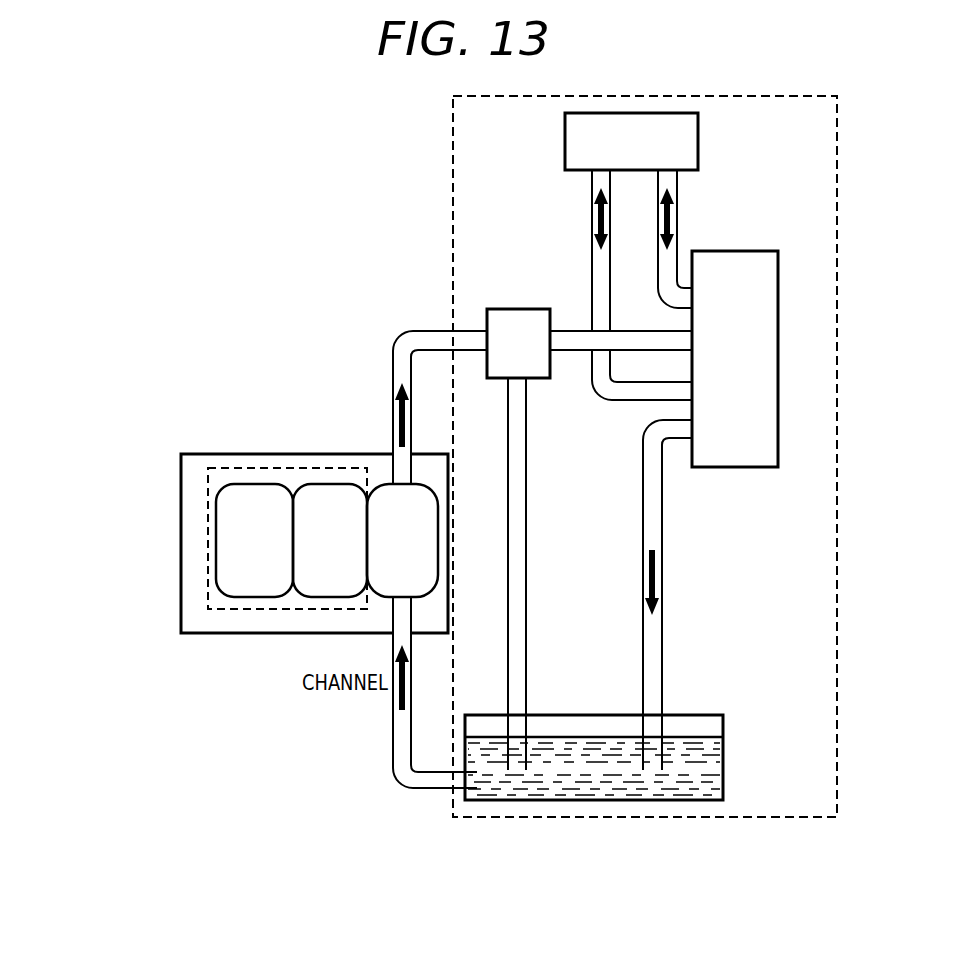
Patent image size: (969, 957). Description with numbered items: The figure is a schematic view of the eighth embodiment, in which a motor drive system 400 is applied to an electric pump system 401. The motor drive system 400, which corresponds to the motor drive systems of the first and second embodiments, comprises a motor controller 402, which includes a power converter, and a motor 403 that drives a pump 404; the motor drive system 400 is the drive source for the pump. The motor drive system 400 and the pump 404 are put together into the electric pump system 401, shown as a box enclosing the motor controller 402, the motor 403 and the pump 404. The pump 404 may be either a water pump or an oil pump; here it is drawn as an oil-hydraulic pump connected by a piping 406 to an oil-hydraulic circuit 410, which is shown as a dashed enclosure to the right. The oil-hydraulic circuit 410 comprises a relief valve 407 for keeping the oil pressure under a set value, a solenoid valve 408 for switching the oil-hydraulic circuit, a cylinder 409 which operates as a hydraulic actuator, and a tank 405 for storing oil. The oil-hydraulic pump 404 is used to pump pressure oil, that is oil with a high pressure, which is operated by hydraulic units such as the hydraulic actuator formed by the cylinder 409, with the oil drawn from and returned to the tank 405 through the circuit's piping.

The motor drive system 400 is at (208, 592).
The electric pump system 401 is at (232, 633).
The motor controller 402 is at (247, 484).
The motor 403 is at (333, 484).
The pump 404 is at (386, 484).
The tank 405 is at (703, 715).
The piping 406 is at (423, 331).
The relief valve 407 is at (525, 309).
The solenoid valve 408 is at (737, 467).
The cylinder 409 is at (698, 143).
The oil-hydraulic circuit 410 is at (453, 140).